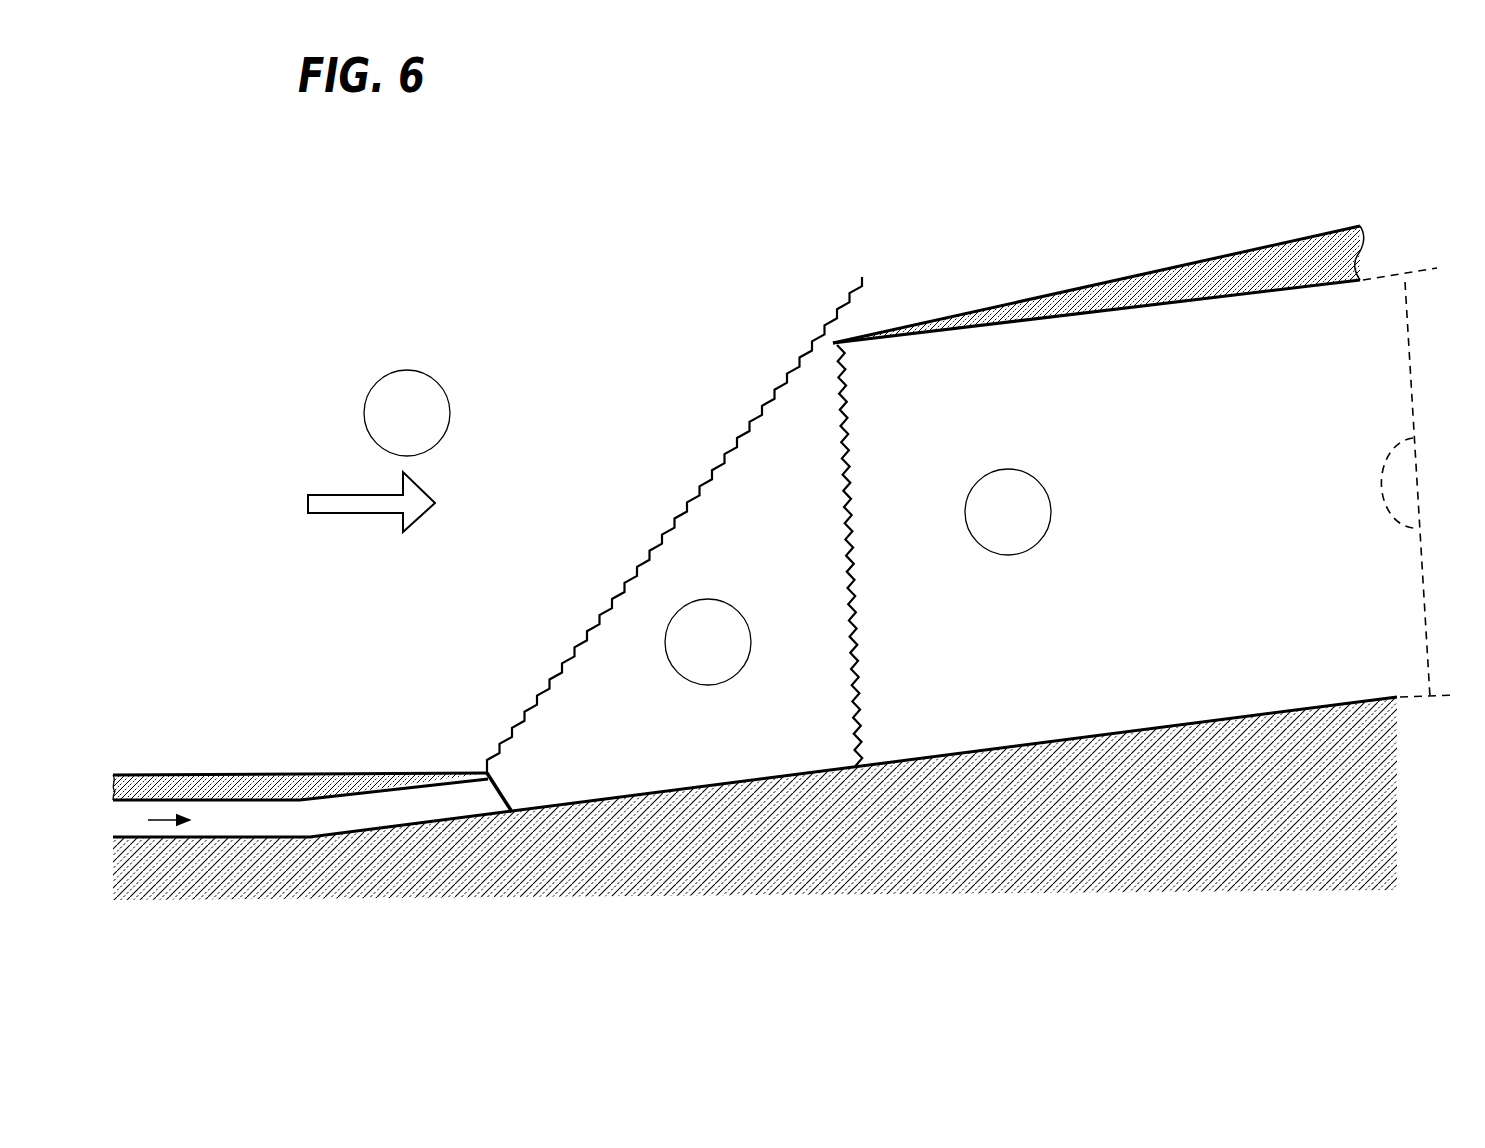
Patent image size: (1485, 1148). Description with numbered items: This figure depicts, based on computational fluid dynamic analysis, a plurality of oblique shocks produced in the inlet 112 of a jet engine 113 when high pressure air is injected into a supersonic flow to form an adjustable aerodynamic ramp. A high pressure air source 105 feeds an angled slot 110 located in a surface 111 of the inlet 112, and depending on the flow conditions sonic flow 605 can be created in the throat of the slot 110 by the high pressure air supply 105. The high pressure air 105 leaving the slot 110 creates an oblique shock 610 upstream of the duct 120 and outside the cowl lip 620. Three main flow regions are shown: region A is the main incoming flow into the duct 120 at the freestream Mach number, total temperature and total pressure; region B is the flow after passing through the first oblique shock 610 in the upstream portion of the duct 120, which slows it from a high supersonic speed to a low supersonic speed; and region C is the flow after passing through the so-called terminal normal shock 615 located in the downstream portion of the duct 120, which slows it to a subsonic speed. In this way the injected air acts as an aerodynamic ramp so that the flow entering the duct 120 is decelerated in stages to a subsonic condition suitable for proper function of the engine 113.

The high pressure air source 105 is at (144, 820).
The angled slot 110 is at (365, 824).
The surface 111 is at (780, 875).
The inlet 112 is at (576, 290).
The jet engine 113 is at (1445, 667).
The duct 120 is at (986, 416).
The sonic flow 605 is at (490, 799).
The oblique shock 610 is at (740, 410).
The terminal normal shock 615 is at (872, 598).
The cowl lip 620 is at (843, 342).